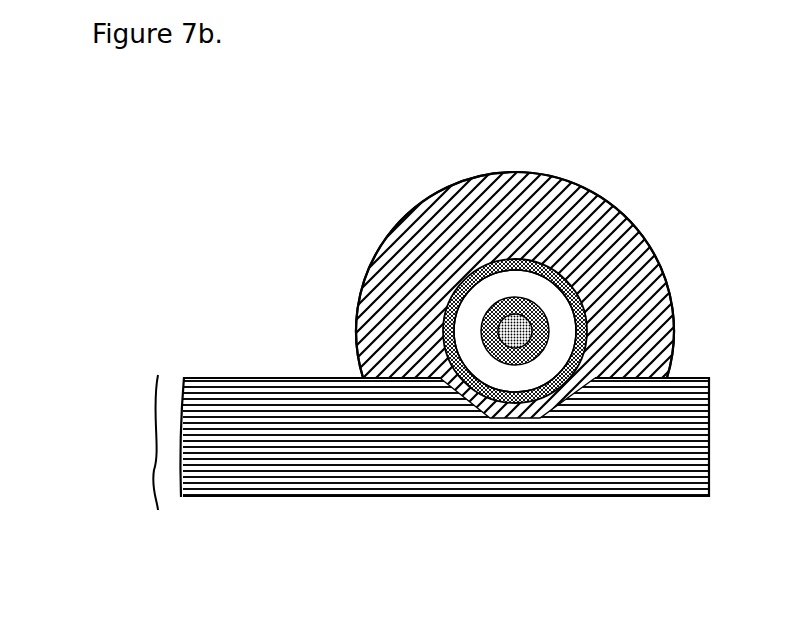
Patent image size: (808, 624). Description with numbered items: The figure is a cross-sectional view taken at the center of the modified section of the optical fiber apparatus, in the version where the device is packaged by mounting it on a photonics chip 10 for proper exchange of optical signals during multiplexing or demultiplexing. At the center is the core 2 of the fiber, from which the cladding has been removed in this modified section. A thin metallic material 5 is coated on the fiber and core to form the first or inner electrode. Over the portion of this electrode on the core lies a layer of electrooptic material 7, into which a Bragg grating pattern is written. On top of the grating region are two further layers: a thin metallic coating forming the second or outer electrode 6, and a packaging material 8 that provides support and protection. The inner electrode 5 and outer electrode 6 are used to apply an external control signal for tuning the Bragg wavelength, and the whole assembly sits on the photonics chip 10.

The core section 2 is at (468, 273).
The metallic material 5 is at (555, 247).
The outer electrode 6 is at (442, 339).
The electrooptic material 7 is at (590, 369).
The packaging material 8 is at (658, 317).
The photonics chip 10 is at (498, 453).